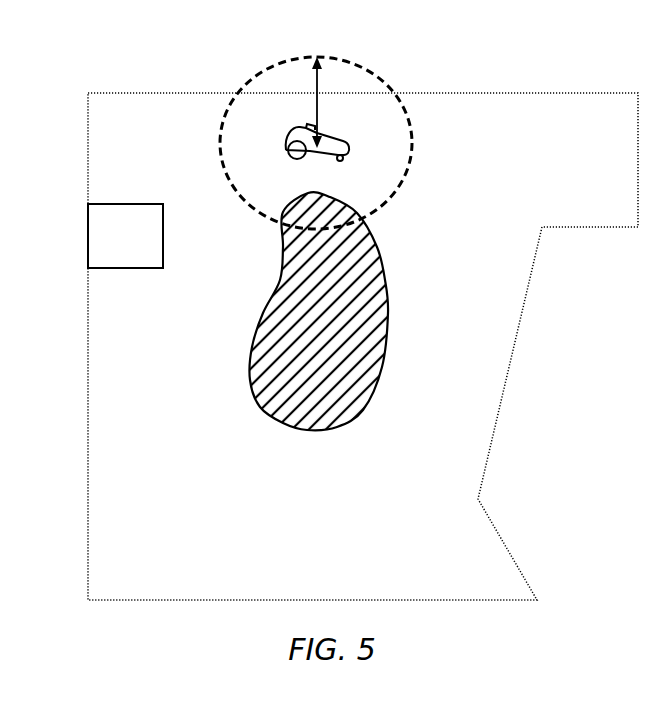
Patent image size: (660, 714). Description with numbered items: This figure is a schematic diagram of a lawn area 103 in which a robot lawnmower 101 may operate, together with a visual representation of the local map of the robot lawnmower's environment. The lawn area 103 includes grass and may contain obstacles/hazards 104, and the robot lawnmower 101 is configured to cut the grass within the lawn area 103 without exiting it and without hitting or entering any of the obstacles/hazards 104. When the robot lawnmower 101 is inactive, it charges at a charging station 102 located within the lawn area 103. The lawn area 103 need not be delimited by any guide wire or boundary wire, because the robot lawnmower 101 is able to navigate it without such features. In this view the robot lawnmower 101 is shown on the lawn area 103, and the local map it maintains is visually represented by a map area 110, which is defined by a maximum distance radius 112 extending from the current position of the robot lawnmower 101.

The robot lawnmower 101 is at (286, 145).
The charging station 102 is at (88, 216).
The lawn area 103 is at (604, 91).
The obstacles/hazards 104 is at (390, 323).
The map area 110 is at (385, 83).
The maximum distance radius 112 is at (316, 106).